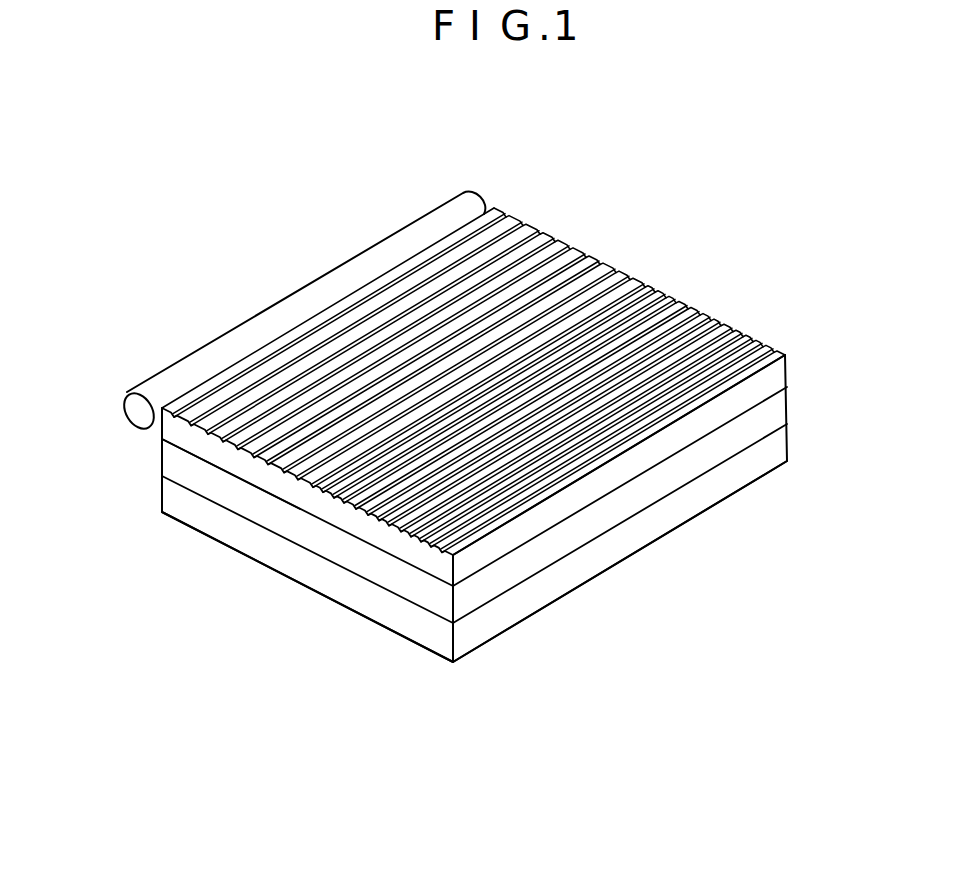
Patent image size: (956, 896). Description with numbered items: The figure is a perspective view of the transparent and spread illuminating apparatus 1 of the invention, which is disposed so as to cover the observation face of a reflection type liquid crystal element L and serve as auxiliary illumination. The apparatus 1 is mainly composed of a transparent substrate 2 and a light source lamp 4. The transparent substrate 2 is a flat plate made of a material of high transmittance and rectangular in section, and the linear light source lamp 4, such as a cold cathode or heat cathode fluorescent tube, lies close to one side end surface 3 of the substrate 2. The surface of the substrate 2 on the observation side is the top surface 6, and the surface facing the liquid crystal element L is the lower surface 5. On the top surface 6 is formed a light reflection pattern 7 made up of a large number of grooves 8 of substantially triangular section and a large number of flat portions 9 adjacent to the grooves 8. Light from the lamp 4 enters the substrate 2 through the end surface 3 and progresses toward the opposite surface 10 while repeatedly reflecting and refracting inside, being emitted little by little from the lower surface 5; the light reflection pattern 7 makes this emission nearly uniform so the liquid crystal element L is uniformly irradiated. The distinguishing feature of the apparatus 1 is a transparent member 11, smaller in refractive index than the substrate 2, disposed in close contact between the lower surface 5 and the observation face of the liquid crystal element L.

The transparent and spread illuminating apparatus 1 is at (459, 398).
The transparent substrate 2 is at (772, 380).
The one side end surface 3 is at (155, 431).
The light source lamp 4 is at (235, 345).
The lower surface 5 is at (222, 468).
The top surface 6 is at (558, 480).
The light reflection pattern 7 is at (473, 335).
The grooves 8 is at (405, 330).
The flat portions 9 is at (370, 340).
The opposite surface 10 is at (697, 425).
The transparent member 11 is at (377, 563).
The reflection type liquid crystal element L is at (568, 572).